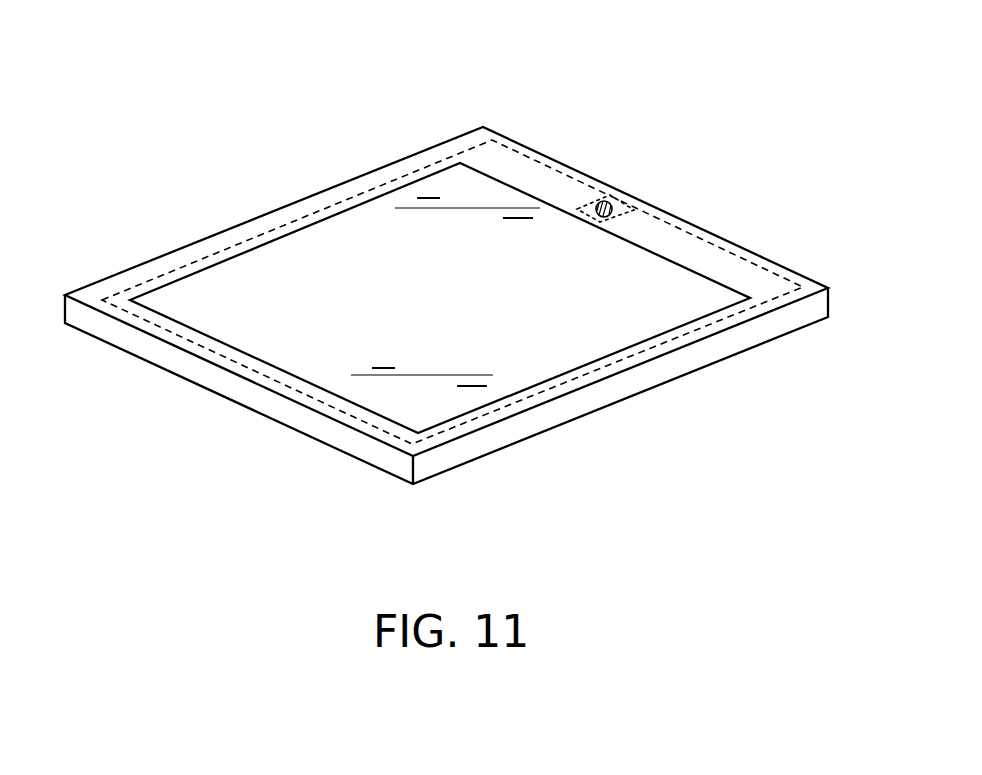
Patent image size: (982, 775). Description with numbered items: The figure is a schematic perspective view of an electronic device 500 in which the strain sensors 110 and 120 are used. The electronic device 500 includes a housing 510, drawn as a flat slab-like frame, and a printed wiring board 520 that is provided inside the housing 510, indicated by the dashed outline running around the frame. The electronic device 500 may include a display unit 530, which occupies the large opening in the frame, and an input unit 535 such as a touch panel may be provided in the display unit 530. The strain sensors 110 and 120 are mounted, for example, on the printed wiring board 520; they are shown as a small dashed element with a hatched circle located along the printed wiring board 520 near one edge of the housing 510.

The electronic device 500 is at (683, 112).
The housing 510 is at (757, 330).
The printed wiring board 520 is at (708, 240).
The display unit 530 is at (440, 312).
The input unit 535 is at (605, 328).
The strain sensor 110 is at (614, 158).
The strain sensor 120 is at (613, 196).